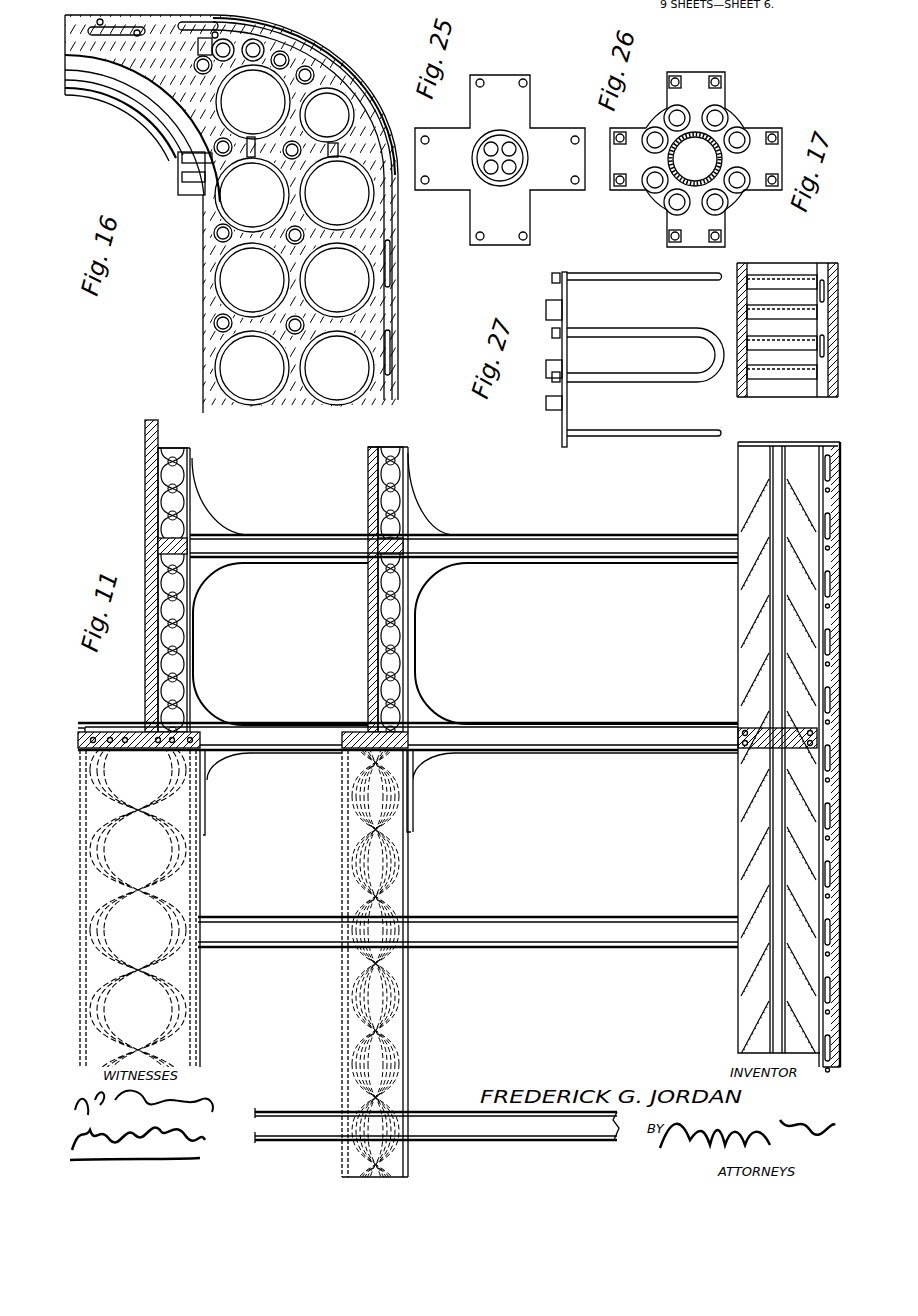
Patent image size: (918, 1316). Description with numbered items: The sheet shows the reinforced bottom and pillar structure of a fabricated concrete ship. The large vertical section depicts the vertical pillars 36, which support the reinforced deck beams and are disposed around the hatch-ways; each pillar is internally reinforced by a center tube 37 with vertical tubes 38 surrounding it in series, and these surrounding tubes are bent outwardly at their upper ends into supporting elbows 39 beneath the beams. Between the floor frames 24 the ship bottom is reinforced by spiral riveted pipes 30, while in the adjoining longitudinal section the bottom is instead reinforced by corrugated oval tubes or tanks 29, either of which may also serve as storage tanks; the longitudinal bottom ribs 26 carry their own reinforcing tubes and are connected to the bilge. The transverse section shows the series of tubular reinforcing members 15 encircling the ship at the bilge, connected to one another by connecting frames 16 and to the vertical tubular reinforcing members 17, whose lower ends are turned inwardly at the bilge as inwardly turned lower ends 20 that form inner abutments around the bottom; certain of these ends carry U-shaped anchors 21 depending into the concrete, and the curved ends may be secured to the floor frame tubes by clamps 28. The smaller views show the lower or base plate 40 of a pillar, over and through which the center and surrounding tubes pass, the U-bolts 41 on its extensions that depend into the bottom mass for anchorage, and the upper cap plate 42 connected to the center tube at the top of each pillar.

In FIG. 16, the tubular reinforcing members 15 is at (323, 66).
In FIG. 11, the connecting frames 16 is at (793, 675).
In FIG. 16, the vertical tubular reinforcing members 17 is at (84, 58).
In FIG. 16, the inwardly turned lower ends 20 is at (183, 112).
In FIG. 16, the U-shaped anchors 21 is at (222, 192).
In FIG. 11, the floor frames 24 is at (740, 767).
In FIG. 11, the longitudinal bottom ribs 26 is at (618, 590).
In FIG. 16, the clamps 28 is at (183, 163).
In FIG. 17, the corrugated oval tubes or tanks 29 is at (772, 278).
In FIG. 16, the spiral riveted pipes 30 is at (218, 358).
In FIG. 11, the spiral riveted pipes 30 is at (753, 620).
In FIG. 11, the vertical pillars 36 is at (587, 737).
In FIG. 26, the center tube 37 is at (740, 135).
In FIG. 26, the vertical tubes 38 is at (658, 137).
In FIG. 11, the supporting elbows 39 is at (417, 503).
In FIG. 26, the lower or base plate 40 is at (688, 80).
In FIG. 27, the U-bolts 41 is at (667, 281).
In FIG. 25, the upper cap plate 42 is at (526, 95).
In FIG. 27, the upper cap plate 42 is at (560, 396).